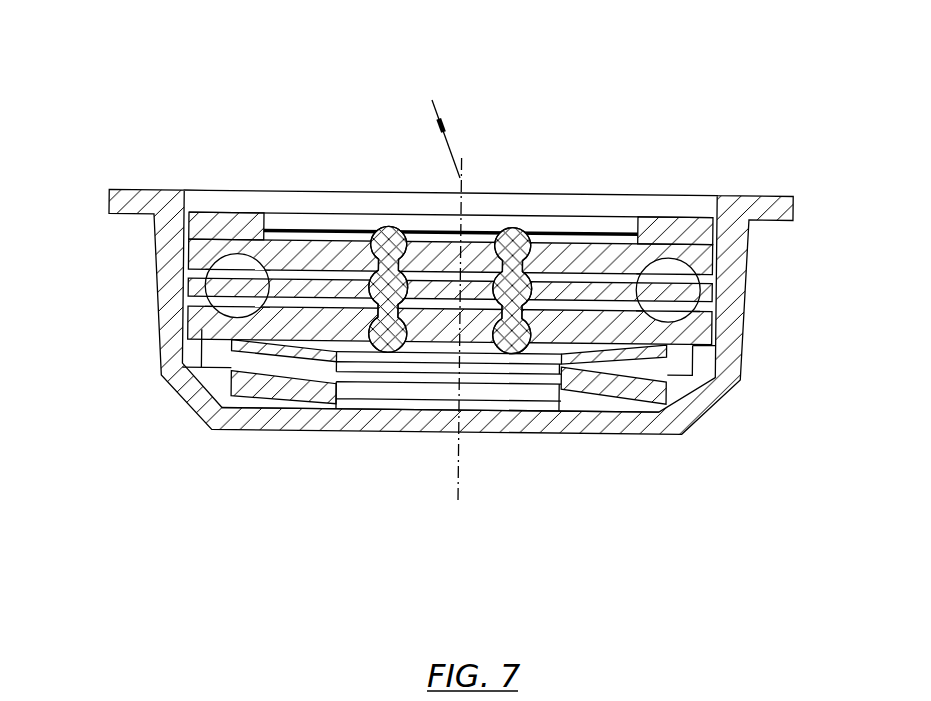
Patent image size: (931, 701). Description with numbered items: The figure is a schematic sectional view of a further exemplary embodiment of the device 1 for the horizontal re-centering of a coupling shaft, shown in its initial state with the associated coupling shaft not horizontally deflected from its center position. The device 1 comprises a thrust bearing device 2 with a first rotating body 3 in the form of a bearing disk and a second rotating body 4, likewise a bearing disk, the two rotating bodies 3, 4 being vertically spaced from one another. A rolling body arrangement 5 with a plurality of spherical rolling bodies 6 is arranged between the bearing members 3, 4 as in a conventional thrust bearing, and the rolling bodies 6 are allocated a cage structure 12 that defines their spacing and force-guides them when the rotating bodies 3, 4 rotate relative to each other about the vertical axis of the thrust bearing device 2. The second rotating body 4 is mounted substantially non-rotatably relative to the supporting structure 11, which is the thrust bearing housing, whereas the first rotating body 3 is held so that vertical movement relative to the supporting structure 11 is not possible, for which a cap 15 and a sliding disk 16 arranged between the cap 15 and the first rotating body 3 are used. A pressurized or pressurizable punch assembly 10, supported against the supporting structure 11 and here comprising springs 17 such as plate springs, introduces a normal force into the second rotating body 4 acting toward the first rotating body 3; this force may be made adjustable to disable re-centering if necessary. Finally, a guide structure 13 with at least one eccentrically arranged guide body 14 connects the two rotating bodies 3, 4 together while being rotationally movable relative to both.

The device for horizontal re-centering 1 is at (694, 33).
The thrust bearing device 2 is at (455, 312).
The first rotating body 3 is at (213, 258).
The second rotating body 4 is at (213, 333).
The rolling body arrangement 5 is at (422, 200).
The rolling body 6 is at (243, 273).
The punch assembly 10 is at (447, 446).
The supporting structure 11 is at (222, 415).
The cage structure 12 is at (213, 288).
The guide structure 13 is at (388, 253).
The guide body 14 is at (513, 253).
The cap 15 is at (240, 218).
The sliding disk 16 is at (208, 230).
The springs 17 is at (422, 392).